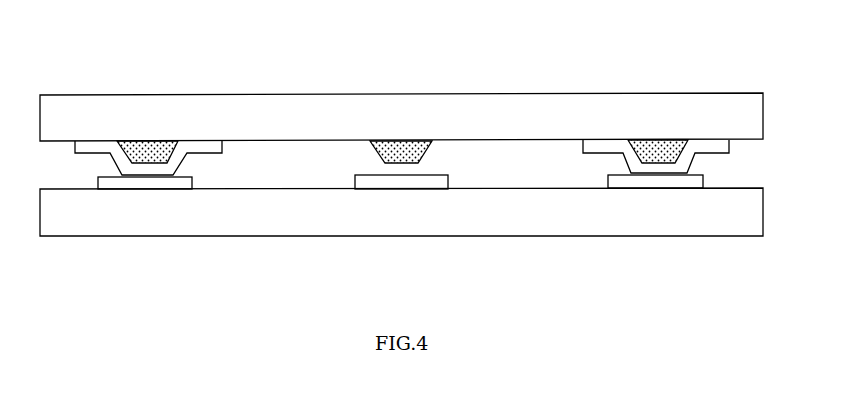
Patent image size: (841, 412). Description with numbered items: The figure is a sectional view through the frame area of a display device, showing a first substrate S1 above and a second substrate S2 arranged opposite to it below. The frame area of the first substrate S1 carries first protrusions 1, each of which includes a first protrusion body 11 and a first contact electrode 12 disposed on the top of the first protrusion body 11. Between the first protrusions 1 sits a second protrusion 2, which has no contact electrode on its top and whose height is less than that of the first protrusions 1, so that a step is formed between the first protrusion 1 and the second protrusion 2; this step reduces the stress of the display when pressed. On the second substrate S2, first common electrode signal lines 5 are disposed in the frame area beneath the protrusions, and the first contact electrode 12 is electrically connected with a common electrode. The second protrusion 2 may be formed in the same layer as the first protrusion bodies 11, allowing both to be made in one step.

The first protrusion 1 is at (148, 95).
The first protrusion body 11 is at (145, 150).
The first contact electrode 12 is at (155, 170).
The second protrusion 2 is at (400, 138).
The first common electrode signal line 5 is at (138, 184).
The first substrate S1 is at (510, 117).
The second substrate S2 is at (356, 210).